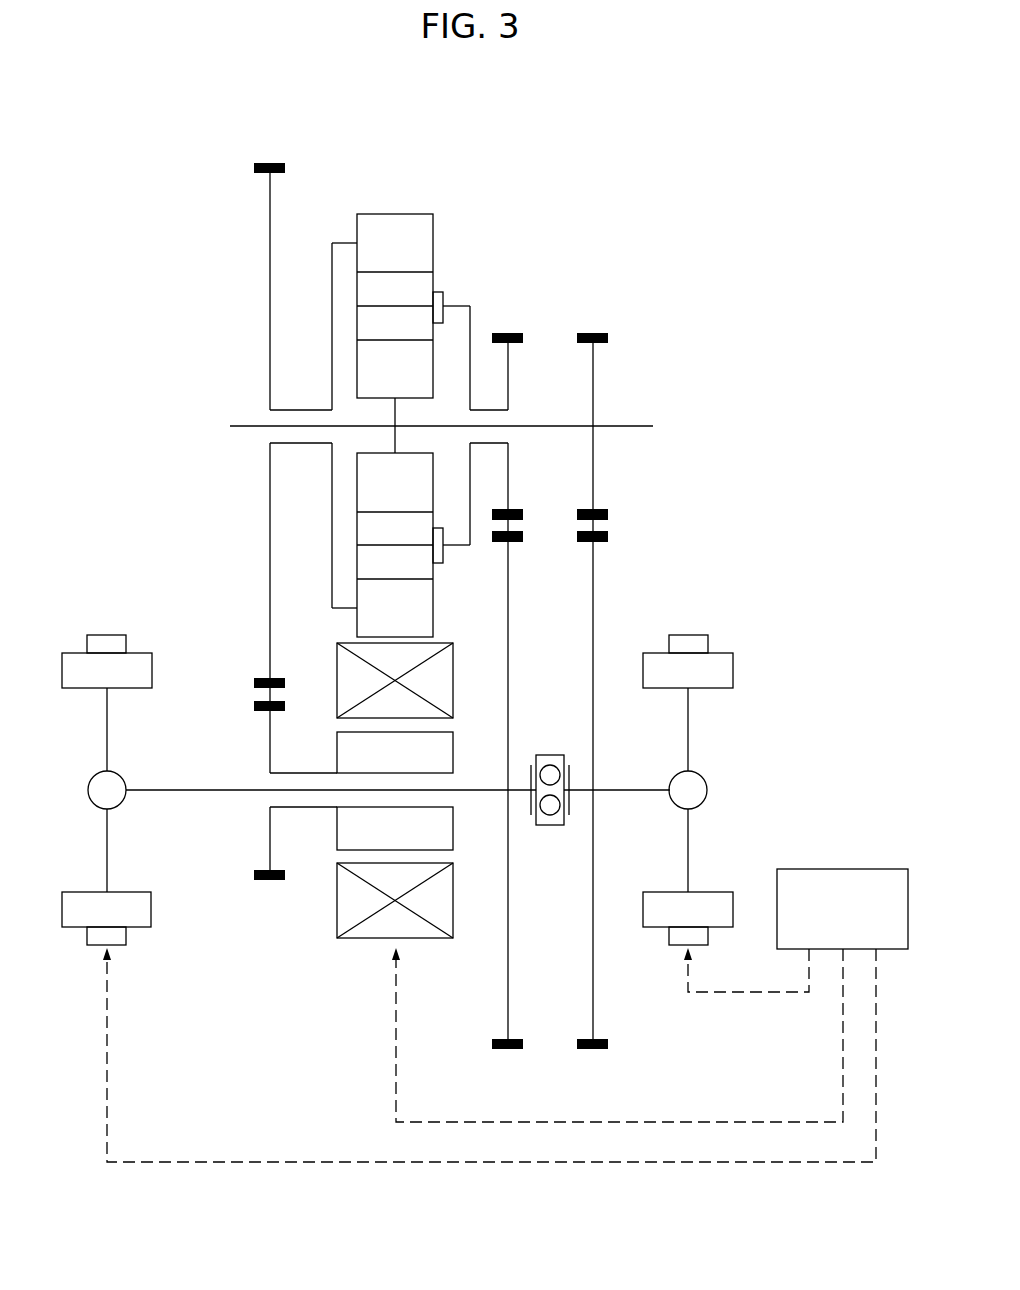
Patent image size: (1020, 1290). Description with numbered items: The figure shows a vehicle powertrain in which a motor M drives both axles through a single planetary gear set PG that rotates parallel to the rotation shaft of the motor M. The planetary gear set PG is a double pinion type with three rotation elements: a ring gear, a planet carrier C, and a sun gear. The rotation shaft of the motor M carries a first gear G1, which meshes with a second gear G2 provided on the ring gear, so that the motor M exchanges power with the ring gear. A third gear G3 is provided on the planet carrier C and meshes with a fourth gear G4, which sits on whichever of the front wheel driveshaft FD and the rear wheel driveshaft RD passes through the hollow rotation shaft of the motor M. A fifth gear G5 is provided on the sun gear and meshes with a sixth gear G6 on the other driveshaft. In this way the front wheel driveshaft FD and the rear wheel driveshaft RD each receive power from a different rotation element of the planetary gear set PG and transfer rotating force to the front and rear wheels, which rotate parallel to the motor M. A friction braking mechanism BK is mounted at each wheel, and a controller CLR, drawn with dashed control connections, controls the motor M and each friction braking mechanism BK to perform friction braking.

The planetary gear set PG is at (404, 200).
The planet carrier C is at (458, 300).
The first gear G1 is at (273, 881).
The second gear G2 is at (270, 162).
The third gear G3 is at (513, 332).
The fourth gear G4 is at (516, 543).
The fifth gear G5 is at (598, 332).
The sixth gear G6 is at (609, 536).
The motor M is at (348, 940).
The front wheel driveshaft FD is at (203, 788).
The rear wheel driveshaft RD is at (619, 788).
The friction braking mechanism BK is at (107, 634).
The controller CLR is at (505, 1015).